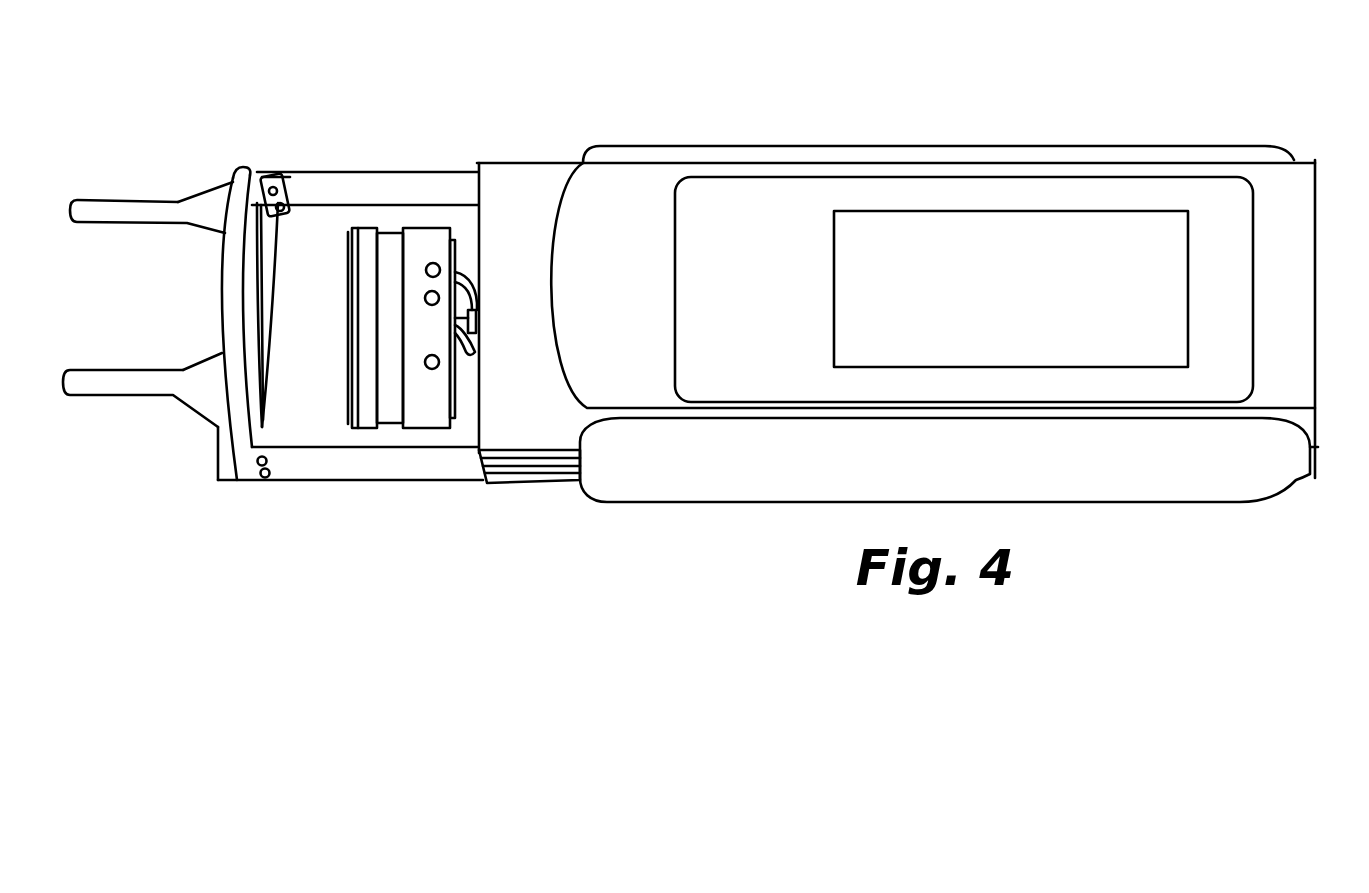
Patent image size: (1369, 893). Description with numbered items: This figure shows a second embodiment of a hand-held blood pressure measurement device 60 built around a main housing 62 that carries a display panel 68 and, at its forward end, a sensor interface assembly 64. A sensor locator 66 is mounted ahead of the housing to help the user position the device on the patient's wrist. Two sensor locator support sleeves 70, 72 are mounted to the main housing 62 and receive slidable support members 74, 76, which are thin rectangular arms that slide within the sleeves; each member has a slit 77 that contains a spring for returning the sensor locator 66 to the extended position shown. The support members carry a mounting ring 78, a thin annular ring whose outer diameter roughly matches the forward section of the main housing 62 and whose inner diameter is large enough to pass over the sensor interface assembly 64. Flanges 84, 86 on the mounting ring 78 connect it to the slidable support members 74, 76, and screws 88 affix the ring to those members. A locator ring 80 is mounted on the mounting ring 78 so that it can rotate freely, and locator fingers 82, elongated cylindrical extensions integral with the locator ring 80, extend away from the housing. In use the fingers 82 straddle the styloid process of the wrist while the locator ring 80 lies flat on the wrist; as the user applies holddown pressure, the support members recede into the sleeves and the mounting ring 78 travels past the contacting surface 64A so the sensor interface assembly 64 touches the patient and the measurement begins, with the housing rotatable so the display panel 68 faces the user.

The hand-held blood pressure measurement device 60 is at (797, 107).
The main housing 62 is at (1297, 182).
The sensor interface assembly 64 is at (387, 310).
The contacting surface 64A is at (347, 334).
The sensor locator 66 is at (232, 160).
The display panel 68 is at (1112, 188).
The sensor locator support sleeve 70 is at (702, 480).
The sensor locator support sleeve 72 is at (643, 150).
The slidable support member 74 is at (370, 463).
The slidable support member 76 is at (372, 171).
The slit 77 is at (522, 470).
The mounting ring 78 is at (250, 168).
The locator ring 80 is at (232, 278).
The locator fingers 82 is at (128, 210).
The flange 84 is at (272, 443).
The flange 86 is at (268, 177).
The screws 88 is at (290, 205).